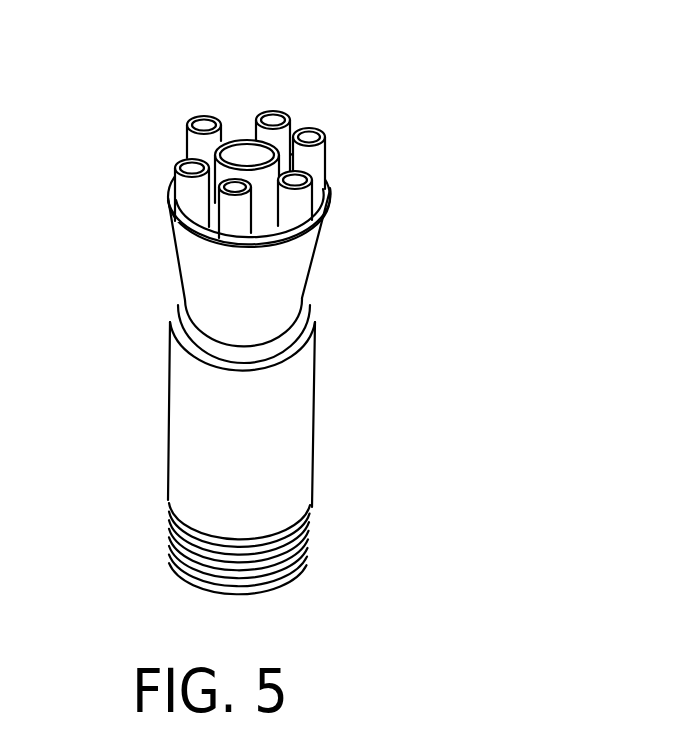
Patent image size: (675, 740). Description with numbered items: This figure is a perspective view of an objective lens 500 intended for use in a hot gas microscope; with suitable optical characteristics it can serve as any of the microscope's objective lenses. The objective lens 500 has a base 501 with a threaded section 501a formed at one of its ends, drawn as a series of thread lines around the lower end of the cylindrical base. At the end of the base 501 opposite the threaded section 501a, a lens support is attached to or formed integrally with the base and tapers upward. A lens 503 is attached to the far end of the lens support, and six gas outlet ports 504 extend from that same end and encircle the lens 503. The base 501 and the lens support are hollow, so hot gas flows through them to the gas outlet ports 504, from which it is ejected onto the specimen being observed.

The objective lens 500 is at (267, 306).
The base 501 is at (282, 412).
The threaded section 501a is at (280, 560).
The lens 503 is at (262, 202).
The gas outlet ports 504 is at (274, 110).